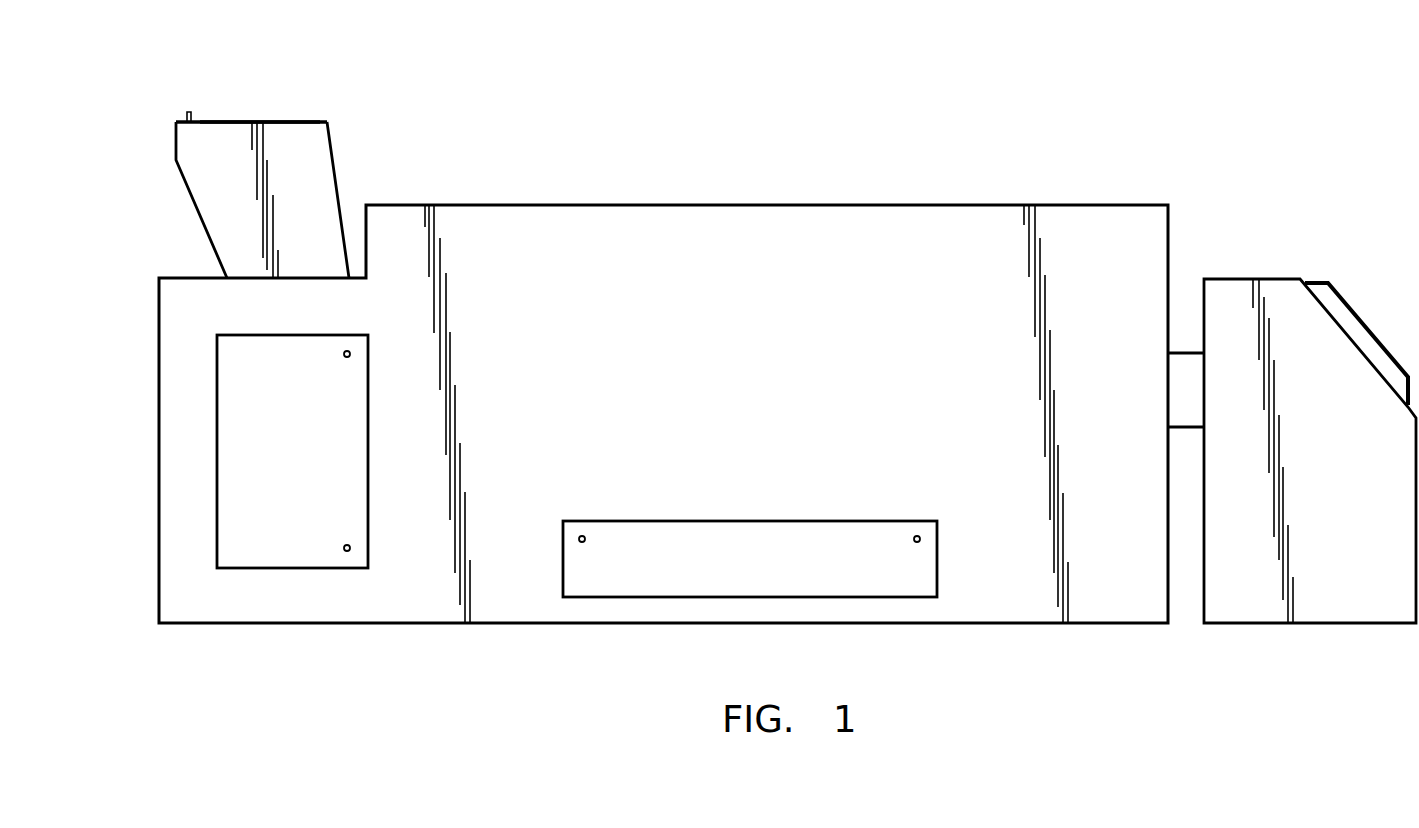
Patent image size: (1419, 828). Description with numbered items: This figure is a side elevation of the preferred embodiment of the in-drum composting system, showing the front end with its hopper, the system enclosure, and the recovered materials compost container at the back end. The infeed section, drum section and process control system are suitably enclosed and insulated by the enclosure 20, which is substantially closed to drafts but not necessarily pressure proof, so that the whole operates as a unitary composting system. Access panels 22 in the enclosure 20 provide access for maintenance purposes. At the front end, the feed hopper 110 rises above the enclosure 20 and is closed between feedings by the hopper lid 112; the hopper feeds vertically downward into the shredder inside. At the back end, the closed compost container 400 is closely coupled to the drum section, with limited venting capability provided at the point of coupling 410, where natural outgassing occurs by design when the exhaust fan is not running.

The enclosure 20 is at (670, 205).
The access panels 22 is at (368, 455).
The feed hopper 110 is at (334, 147).
The hopper lid 112 is at (280, 121).
The point of coupling 410 is at (1183, 353).
The closed compost container 400 is at (1312, 623).